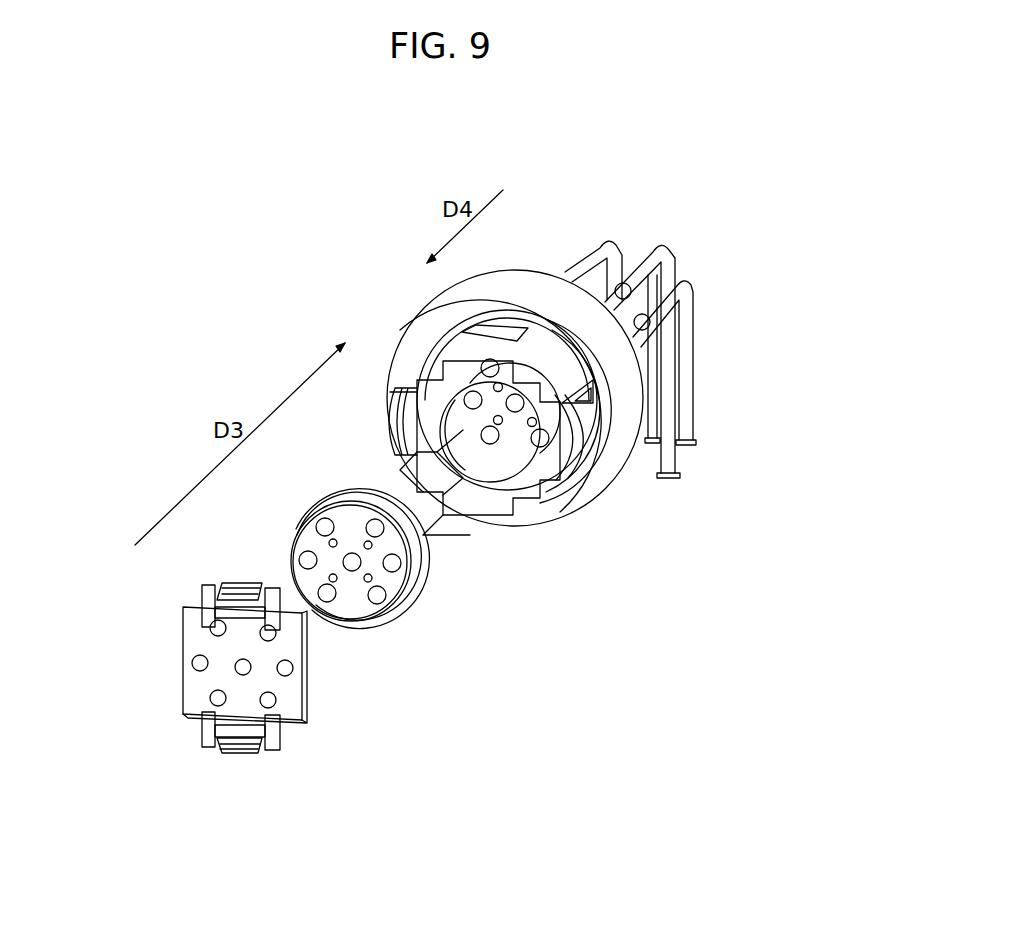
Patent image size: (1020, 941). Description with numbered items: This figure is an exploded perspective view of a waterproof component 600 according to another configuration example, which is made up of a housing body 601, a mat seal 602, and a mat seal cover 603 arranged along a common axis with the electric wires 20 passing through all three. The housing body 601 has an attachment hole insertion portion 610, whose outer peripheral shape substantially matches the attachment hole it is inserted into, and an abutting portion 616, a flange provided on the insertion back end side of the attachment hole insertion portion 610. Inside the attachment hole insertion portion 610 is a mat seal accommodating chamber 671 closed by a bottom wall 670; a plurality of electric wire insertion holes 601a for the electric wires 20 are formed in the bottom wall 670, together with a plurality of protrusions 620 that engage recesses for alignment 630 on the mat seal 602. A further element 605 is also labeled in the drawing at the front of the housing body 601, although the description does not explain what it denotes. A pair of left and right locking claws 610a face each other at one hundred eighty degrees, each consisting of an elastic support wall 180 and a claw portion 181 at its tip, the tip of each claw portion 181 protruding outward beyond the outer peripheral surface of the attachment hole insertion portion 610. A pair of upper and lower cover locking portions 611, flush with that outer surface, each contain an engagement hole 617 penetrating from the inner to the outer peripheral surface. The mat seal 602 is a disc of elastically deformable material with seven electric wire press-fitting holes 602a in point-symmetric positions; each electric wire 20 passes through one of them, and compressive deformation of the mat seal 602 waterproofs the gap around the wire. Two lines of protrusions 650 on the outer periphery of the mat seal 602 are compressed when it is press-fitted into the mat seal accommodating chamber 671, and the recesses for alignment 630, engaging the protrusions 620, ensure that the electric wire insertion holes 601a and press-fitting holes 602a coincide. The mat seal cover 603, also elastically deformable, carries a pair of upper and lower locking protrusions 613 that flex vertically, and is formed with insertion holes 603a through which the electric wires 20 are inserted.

The waterproof component 600 is at (403, 277).
The housing body 601 is at (503, 250).
The electric wire insertion hole 601a is at (445, 420).
The mat seal 602 is at (356, 610).
The electric wire press-fitting hole 602a is at (305, 560).
The mat seal cover 603 is at (292, 715).
The insertion hole 603a is at (210, 698).
The pin holes 605 is at (508, 434).
The attachment hole insertion portion 610 is at (600, 290).
The locking claw 610a is at (376, 443).
The cover locking portion 611 is at (552, 390).
The locking protrusion 613 is at (203, 590).
The abutting portion 616 is at (416, 335).
The engagement hole 617 is at (500, 325).
The protrusion 620 is at (600, 440).
The recess for alignment 630 is at (408, 560).
The protrusions 650 is at (322, 490).
The bottom wall 670 is at (540, 448).
The mat seal accommodating chamber 671 is at (532, 428).
The elastic support wall 180 is at (397, 458).
The claw portion 181 is at (392, 400).
The electric wire 20 is at (667, 403).